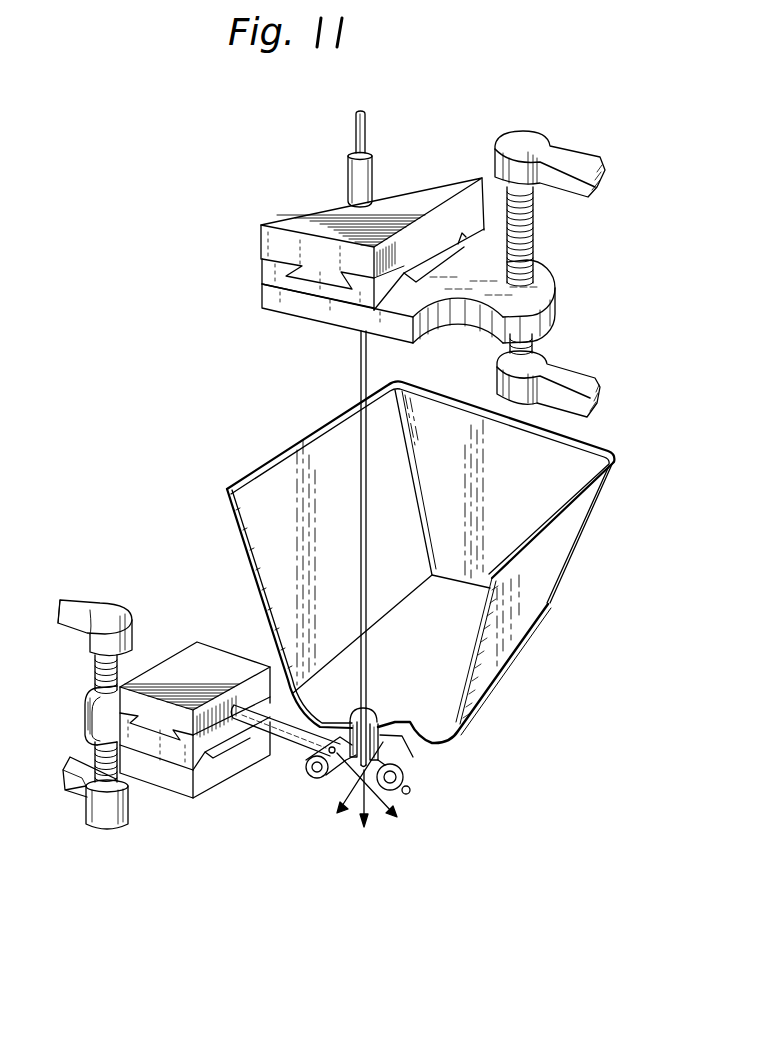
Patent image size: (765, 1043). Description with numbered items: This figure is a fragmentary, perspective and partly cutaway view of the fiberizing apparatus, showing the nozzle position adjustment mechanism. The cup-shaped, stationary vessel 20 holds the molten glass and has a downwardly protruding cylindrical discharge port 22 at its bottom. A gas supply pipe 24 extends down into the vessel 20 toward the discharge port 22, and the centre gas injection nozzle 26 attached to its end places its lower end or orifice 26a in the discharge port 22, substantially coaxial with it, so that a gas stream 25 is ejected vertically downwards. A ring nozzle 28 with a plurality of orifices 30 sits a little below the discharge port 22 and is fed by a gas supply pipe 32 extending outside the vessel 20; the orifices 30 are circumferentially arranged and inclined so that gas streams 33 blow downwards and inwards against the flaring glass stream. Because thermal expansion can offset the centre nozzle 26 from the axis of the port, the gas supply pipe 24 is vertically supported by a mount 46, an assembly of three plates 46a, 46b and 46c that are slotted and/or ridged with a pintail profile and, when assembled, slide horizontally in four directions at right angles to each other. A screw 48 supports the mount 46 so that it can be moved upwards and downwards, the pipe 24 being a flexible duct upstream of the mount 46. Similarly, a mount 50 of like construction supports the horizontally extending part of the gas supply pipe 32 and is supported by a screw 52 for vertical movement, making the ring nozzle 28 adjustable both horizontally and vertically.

The vessel 20 is at (555, 563).
The discharge port 22 is at (413, 757).
The gas supply pipe 24 is at (359, 377).
The gas stream 25 is at (364, 806).
The gas injection nozzle (centre nozzle) 26 is at (380, 713).
The lower end (orifice) of the nozzle 26a is at (408, 793).
The ring nozzle 28 is at (323, 772).
The orifices 30 is at (336, 758).
The gas supply pipe 32 is at (300, 742).
The gas stream 33 is at (350, 795).
The mount 46 is at (377, 227).
The plate 46a is at (327, 183).
The plate 46b is at (262, 267).
The plate 46c is at (262, 300).
The screw 48 is at (534, 230).
The mount 50 is at (164, 667).
The screw 52 is at (92, 743).